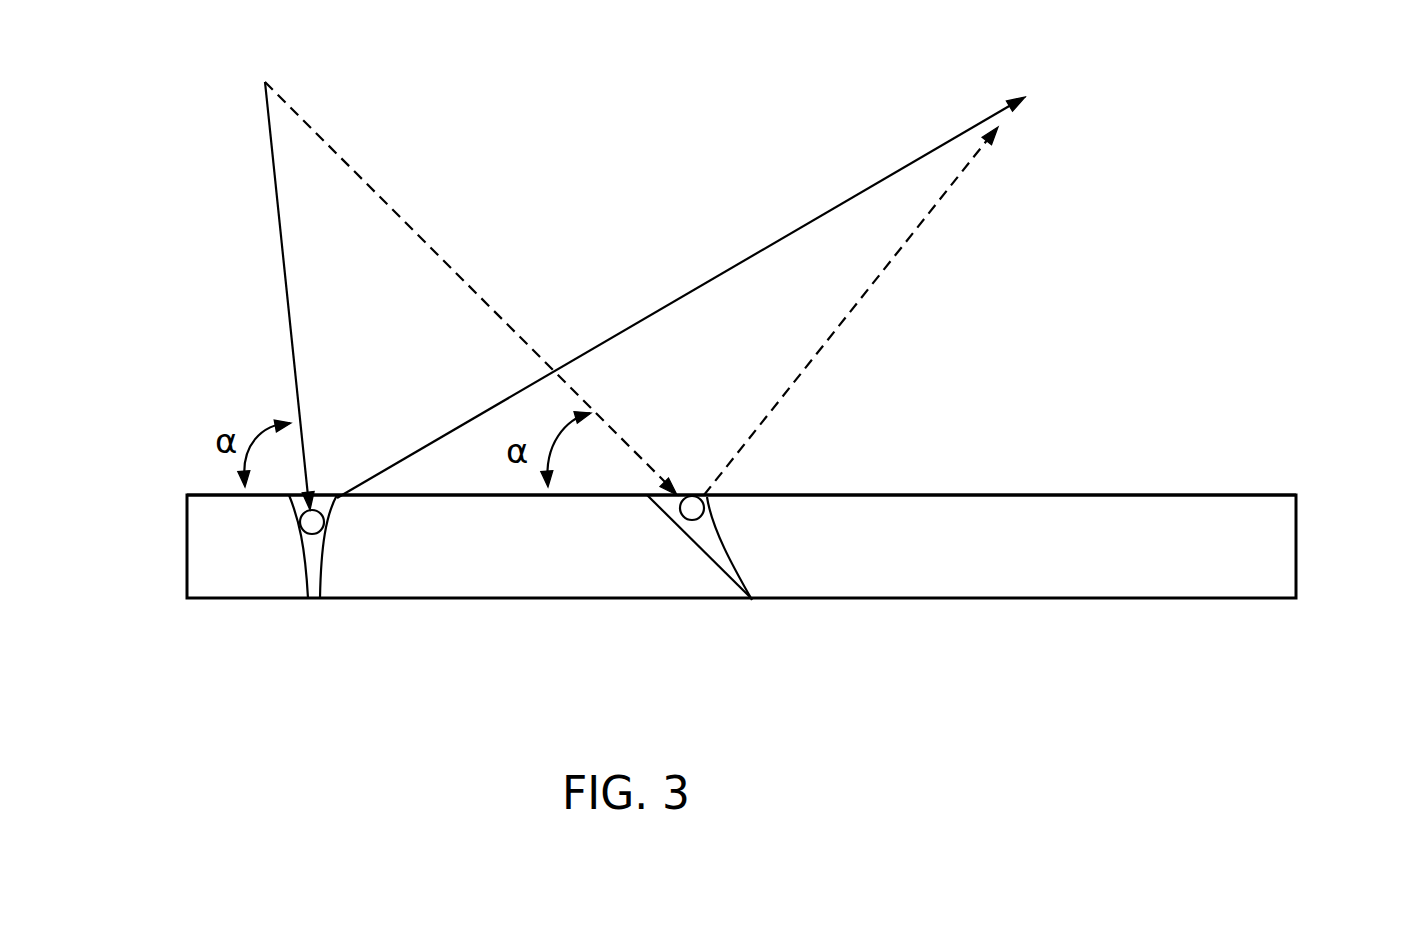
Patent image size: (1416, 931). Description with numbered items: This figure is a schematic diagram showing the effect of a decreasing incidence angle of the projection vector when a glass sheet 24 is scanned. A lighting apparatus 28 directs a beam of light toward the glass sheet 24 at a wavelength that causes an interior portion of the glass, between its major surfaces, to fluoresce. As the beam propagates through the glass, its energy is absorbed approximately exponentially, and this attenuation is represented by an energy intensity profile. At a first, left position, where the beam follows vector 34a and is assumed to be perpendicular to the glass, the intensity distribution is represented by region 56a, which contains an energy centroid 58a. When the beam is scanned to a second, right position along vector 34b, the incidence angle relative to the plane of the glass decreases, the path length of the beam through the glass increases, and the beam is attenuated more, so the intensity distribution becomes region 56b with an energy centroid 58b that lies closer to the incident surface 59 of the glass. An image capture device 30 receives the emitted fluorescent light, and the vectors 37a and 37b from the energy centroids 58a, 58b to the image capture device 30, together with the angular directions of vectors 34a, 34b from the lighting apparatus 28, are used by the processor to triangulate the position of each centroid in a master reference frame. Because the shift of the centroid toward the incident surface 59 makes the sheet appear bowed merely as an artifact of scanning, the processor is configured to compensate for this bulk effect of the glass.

The glass sheet 24 is at (1312, 526).
The lighting apparatus 28 is at (268, 65).
The image capture device 30 is at (1047, 79).
The projection vector (first position) 34a is at (282, 285).
The projection vector (second position) 34b is at (413, 232).
The received light vector (first position) 37a is at (710, 280).
The received light vector (second position) 37b is at (830, 333).
The intensity distribution region 56a is at (306, 549).
The intensity distribution region 56b is at (702, 537).
The energy centroid 58a is at (302, 523).
The energy centroid 58b is at (680, 508).
The incident surface 59 is at (1092, 495).